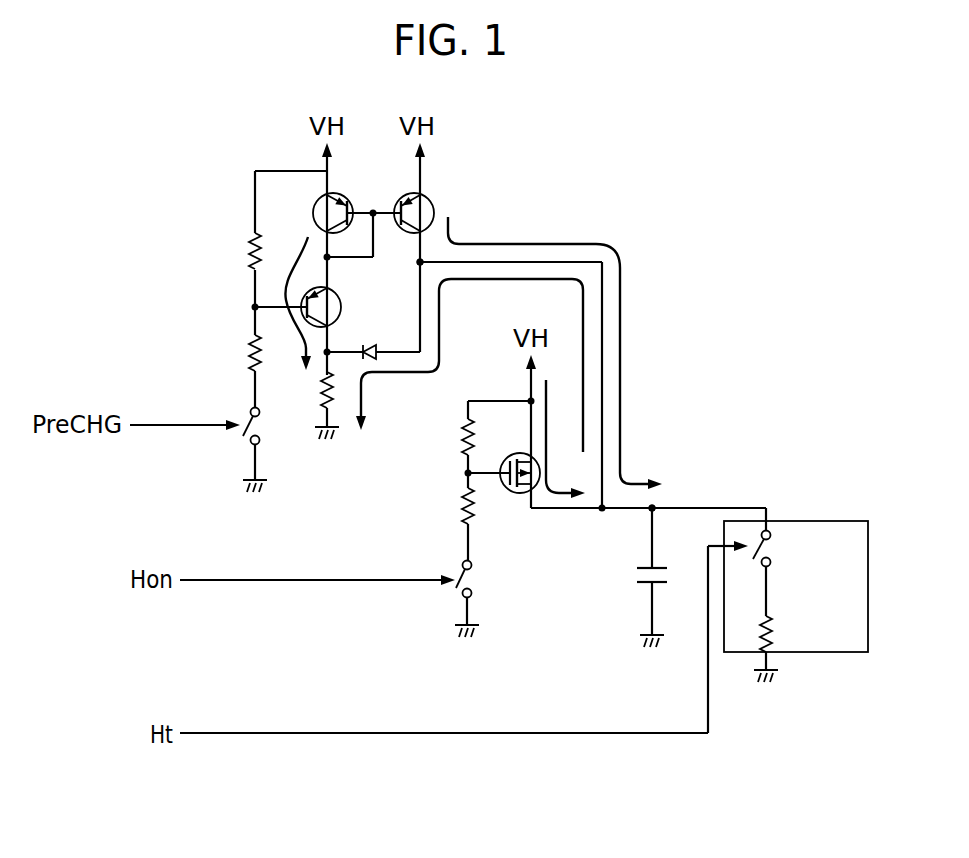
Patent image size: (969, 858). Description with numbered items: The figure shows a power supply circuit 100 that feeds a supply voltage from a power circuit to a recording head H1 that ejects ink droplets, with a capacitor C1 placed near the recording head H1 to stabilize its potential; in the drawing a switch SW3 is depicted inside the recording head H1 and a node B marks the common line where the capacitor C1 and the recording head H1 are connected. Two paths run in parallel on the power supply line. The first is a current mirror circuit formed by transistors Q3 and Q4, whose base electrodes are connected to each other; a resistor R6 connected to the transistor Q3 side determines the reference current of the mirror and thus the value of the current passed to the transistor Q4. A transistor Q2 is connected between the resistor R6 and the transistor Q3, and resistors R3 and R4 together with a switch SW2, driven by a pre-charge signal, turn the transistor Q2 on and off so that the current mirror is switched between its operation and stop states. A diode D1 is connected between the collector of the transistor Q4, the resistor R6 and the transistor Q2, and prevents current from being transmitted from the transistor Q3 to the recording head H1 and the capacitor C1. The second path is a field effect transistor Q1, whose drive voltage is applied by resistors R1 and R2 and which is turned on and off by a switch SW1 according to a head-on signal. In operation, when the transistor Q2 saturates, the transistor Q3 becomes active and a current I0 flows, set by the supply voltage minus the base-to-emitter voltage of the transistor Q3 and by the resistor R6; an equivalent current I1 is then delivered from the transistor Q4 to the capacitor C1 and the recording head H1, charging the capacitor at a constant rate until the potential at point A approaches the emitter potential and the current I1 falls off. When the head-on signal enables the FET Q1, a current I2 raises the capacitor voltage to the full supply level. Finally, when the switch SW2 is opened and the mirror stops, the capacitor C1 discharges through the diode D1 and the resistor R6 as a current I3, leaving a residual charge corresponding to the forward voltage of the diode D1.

The power supply circuit 100 is at (632, 140).
The field effect transistor Q1 is at (520, 496).
The transistor Q2 is at (337, 295).
The transistor Q3 is at (315, 203).
The transistor Q4 is at (430, 199).
The resistor R1 is at (464, 510).
The resistor R2 is at (464, 438).
The resistor R3 is at (250, 355).
The resistor R4 is at (250, 250).
The resistor R6 is at (318, 400).
The diode D1 is at (368, 345).
The capacitor C1 is at (635, 575).
The switch SW1 is at (463, 578).
The switch SW2 is at (247, 438).
The switch in heater SW3 is at (765, 547).
The recording head H1 is at (793, 521).
The point A is at (417, 264).
The node B is at (657, 501).
The current I0 is at (297, 298).
The current I1 is at (555, 348).
The current I2 is at (565, 439).
The current I3 is at (469, 365).